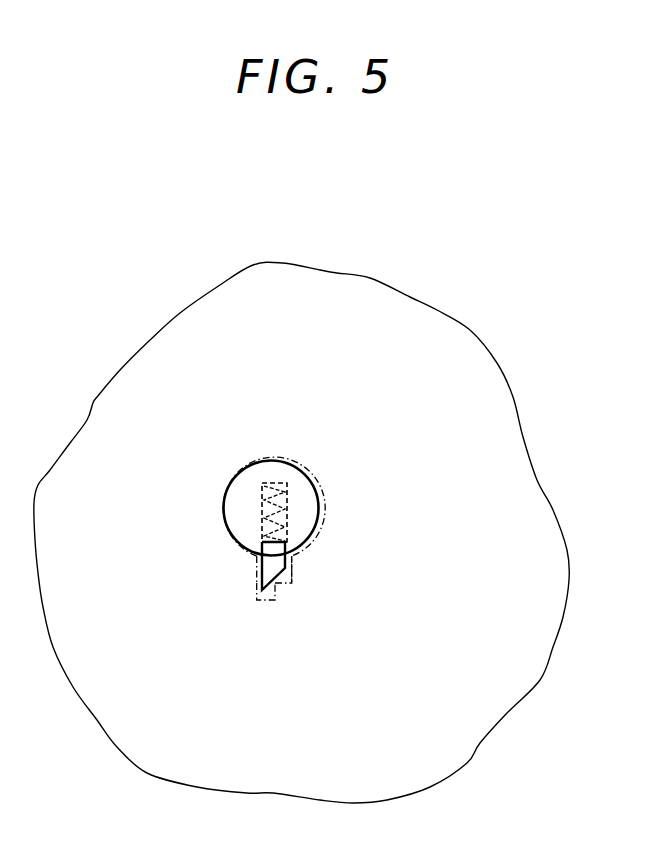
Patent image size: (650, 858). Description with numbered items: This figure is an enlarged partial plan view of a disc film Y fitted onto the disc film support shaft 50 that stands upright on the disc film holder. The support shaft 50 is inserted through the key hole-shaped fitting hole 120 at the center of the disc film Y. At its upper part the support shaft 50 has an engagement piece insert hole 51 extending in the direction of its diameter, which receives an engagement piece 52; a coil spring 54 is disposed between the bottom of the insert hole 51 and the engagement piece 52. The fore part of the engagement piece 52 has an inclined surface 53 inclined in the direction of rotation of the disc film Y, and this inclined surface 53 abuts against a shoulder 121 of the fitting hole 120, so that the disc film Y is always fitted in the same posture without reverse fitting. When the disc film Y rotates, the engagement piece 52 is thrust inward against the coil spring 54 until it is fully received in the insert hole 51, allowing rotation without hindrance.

The disc film support shaft 50 is at (303, 485).
The engagement piece insert hole 51 is at (262, 517).
The engagement piece 52 is at (267, 565).
The inclined surface 53 is at (267, 603).
The coil spring 54 is at (262, 486).
The key hole-shaped fitting hole 120 is at (317, 530).
The shoulder 121 is at (288, 585).
The disc film Y is at (549, 645).